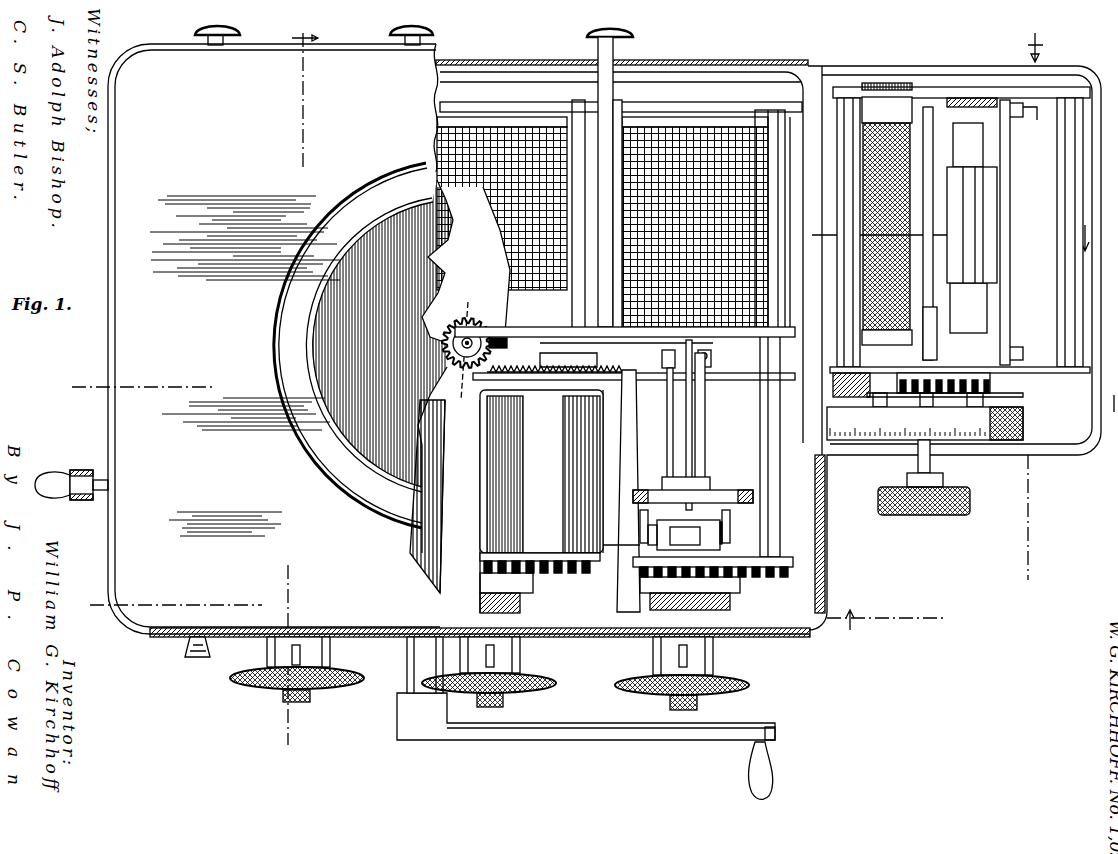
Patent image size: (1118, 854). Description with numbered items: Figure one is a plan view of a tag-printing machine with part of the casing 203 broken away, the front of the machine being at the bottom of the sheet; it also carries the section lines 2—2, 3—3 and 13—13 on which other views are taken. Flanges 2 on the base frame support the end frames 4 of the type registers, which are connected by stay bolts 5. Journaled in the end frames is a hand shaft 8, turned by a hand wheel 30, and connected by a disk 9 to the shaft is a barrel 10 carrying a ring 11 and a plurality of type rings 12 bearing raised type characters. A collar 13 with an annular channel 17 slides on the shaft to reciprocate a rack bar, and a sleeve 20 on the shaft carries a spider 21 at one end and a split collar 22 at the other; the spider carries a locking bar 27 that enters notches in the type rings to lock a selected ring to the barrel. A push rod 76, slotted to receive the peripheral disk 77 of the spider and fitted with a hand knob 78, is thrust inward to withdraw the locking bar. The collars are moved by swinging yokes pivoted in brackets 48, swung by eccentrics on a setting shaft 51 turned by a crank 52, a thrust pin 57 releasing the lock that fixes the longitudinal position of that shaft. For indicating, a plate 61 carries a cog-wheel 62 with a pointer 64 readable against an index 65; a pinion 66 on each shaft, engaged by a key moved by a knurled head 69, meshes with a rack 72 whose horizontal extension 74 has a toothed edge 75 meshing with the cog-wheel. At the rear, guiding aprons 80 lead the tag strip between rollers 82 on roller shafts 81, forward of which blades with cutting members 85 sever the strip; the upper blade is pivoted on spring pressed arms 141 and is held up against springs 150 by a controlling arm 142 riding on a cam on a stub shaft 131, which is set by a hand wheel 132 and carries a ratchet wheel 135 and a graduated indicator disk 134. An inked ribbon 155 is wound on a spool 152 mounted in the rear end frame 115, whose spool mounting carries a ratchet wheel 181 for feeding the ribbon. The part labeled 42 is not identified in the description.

The casing 203 is at (459, 339).
The index 65 is at (288, 308).
The disk 9 is at (474, 118).
The cog-wheel 62 is at (467, 340).
The pointer 64 is at (508, 336).
The end frames 4 is at (532, 102).
The flanges 2 is at (298, 375).
The hand knob 78 is at (233, 34).
The push rod 76 is at (207, 38).
The type rings 12 is at (587, 108).
The stay bolts 5 is at (614, 118).
The ring 11 is at (772, 328).
The barrel 10 is at (885, 233).
The toothed edge 75 is at (634, 367).
The horizontal extension 74 is at (624, 410).
The locking bar 27 is at (686, 393).
The split collar 22 is at (709, 368).
The sleeve 20 is at (705, 430).
The spider 21 is at (728, 493).
The hand shaft 8 is at (682, 518).
The collar 13 is at (729, 528).
The bracket 48 is at (716, 540).
The peripheral disk 77 is at (600, 497).
The annular channel 17 is at (618, 545).
The plate 61 is at (524, 503).
The rack teeth 42 is at (562, 580).
The pinion 66 is at (528, 634).
The rack 72 is at (590, 634).
The hand wheel 30 is at (364, 670).
The knurled head 69 is at (310, 697).
The thrust pin 57 is at (192, 660).
The section line 3 is at (133, 385).
The crank 52 is at (49, 472).
The setting shaft 51 is at (97, 478).
The rear end frame 115 is at (961, 221).
The ratchet wheel 181 is at (877, 83).
The spool 152 is at (892, 110).
The inked ribbon 155 is at (935, 110).
The cutting members 85 is at (955, 104).
The rollers 82 is at (983, 165).
The guiding aprons 80 is at (990, 225).
The roller shafts 81 is at (977, 254).
The springs 150 is at (1020, 117).
The spring pressed arms 141 is at (1010, 150).
The controlling arm 142 is at (1023, 383).
The ratchet wheel 135 is at (990, 393).
The indicator disk 134 is at (1023, 433).
The stub shaft 131 is at (932, 462).
The hand wheel 132 is at (972, 505).